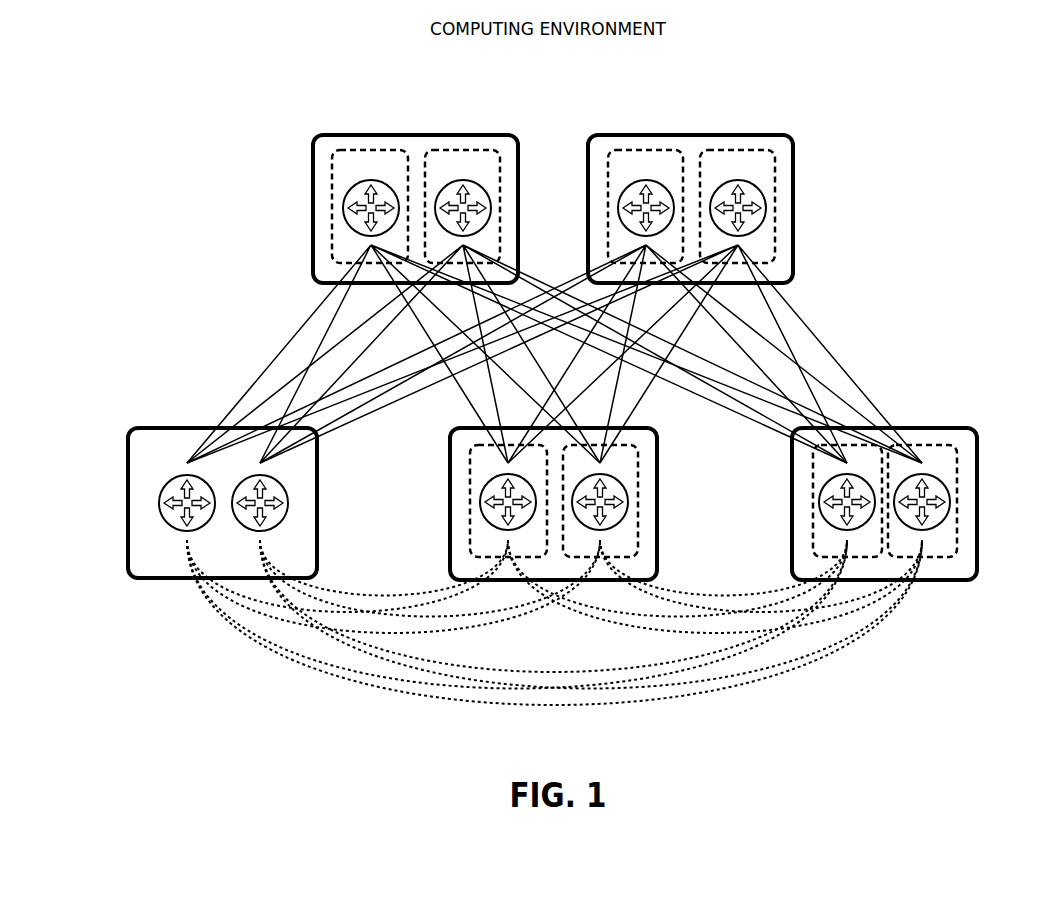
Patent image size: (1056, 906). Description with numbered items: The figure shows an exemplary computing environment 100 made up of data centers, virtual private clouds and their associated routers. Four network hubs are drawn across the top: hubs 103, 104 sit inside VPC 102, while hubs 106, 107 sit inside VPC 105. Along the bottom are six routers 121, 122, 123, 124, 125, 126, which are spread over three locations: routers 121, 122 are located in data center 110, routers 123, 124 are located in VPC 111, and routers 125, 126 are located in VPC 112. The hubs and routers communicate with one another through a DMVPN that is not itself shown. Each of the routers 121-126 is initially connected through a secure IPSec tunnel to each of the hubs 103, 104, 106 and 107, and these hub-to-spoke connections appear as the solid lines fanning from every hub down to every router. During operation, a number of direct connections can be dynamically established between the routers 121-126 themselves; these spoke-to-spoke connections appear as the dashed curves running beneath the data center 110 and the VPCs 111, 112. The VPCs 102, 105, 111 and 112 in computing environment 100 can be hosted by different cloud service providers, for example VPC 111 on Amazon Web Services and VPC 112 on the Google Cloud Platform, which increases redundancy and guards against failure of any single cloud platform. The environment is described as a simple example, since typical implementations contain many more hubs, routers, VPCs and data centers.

The computing environment 100 is at (554, 373).
The VPC 102 is at (420, 196).
The network hub 103 is at (334, 247).
The network hub 104 is at (500, 193).
The VPC 105 is at (689, 196).
The network hub 106 is at (608, 250).
The network hub 107 is at (760, 250).
The data center 110 is at (181, 503).
The VPC 111 is at (558, 504).
The VPC 112 is at (883, 504).
The router 121 is at (181, 493).
The router 122 is at (270, 496).
The router 123 is at (480, 502).
The router 124 is at (628, 502).
The router 125 is at (820, 502).
The router 126 is at (950, 502).